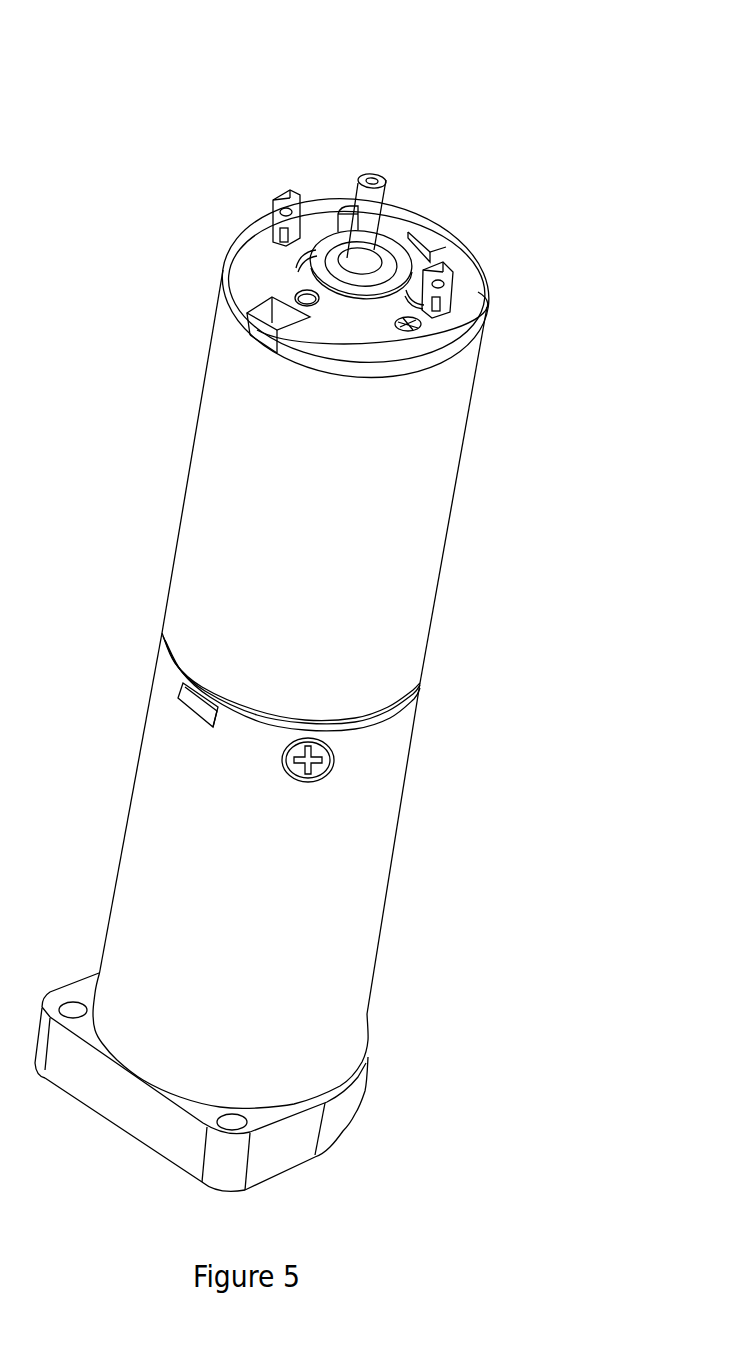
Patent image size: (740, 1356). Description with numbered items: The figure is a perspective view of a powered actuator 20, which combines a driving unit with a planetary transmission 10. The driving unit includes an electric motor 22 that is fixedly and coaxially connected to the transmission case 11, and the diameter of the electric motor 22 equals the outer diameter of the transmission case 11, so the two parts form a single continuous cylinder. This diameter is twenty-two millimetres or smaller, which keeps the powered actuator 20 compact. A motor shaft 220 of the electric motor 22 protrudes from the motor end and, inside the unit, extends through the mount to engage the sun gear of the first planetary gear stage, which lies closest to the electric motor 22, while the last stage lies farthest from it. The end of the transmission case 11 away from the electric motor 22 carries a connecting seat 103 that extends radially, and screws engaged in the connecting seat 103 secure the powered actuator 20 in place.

The powered actuator 20 is at (113, 45).
The motor shaft 220 is at (373, 201).
The electric motor 22 is at (436, 565).
The transmission 10 is at (385, 886).
The transmission case 11 is at (348, 968).
The connecting seat 103 is at (343, 1127).